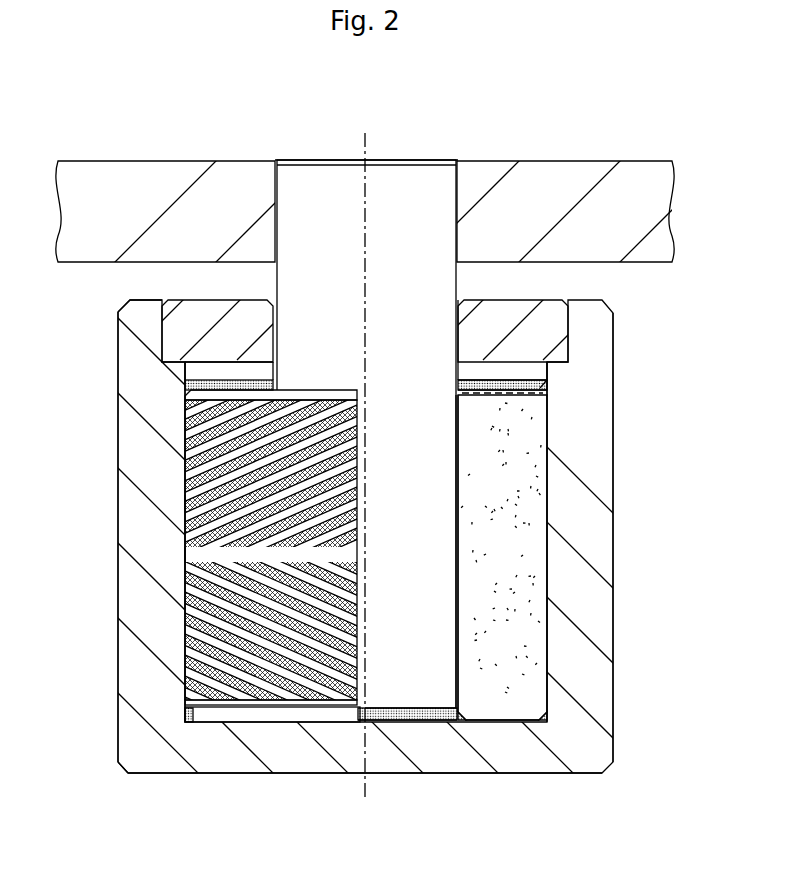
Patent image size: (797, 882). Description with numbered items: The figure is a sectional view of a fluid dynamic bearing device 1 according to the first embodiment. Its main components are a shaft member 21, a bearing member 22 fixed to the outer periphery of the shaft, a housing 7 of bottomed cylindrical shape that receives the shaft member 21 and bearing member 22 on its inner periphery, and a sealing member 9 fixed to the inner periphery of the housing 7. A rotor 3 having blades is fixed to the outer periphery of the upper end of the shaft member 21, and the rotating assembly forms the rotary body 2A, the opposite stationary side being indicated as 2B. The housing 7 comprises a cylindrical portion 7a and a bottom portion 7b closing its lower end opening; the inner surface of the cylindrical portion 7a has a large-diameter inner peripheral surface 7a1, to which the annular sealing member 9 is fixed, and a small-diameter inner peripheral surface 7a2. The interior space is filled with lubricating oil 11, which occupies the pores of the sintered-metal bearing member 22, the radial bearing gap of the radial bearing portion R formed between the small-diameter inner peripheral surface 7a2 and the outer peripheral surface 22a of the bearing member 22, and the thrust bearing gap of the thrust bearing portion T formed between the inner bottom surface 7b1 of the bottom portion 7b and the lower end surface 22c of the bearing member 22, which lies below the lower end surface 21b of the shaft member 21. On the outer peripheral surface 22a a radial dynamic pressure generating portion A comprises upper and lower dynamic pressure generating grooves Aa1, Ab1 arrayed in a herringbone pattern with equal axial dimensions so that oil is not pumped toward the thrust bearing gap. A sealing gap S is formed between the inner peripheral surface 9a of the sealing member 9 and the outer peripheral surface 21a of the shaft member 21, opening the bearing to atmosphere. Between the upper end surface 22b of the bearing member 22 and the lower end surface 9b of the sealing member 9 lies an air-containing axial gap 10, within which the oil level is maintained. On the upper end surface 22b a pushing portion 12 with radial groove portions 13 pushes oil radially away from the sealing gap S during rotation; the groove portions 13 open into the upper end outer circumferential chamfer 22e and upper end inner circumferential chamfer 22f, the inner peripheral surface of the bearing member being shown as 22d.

The fluid dynamic bearing device 1 is at (685, 345).
The rotary body 2A is at (464, 147).
The stationary side member 2B is at (108, 735).
The rotor 3 is at (556, 187).
The housing 7 is at (594, 452).
The cylindrical portion 7a is at (140, 473).
The large-diameter inner peripheral surface 7a1 is at (162, 342).
The small-diameter inner peripheral surface 7a2 is at (188, 577).
The bottom portion 7b is at (460, 758).
The inner bottom surface 7b1 is at (298, 720).
The sealing member 9 is at (548, 330).
The inner peripheral surface of the sealing member 9a is at (457, 332).
The lower end surface of the sealing member 9b is at (192, 373).
The axial gap 10 is at (235, 372).
The lubricating oil 11 is at (431, 722).
The pushing portion 12 is at (483, 383).
The groove portions 13 is at (505, 395).
The shaft member 21 is at (401, 193).
The outer peripheral surface of the shaft member 21a is at (460, 658).
The lower end surface of the shaft member 21b is at (397, 722).
The bearing member 22 is at (520, 492).
The outer peripheral surface of the bearing member 22a is at (548, 628).
The upper end surface of the bearing member 22b is at (548, 372).
The lower end surface of the bearing member 22c is at (235, 722).
The inner peripheral surface of bearing sleeve 22d is at (452, 540).
The upper end outer circumferential chamfer 22e is at (190, 384).
The upper end inner circumferential chamfer 22f is at (457, 385).
The radial dynamic pressure generating portion A is at (182, 446).
The upper dynamic pressure generating grooves Aa1 is at (192, 536).
The lower dynamic pressure generating grooves Ab1 is at (196, 652).
The radial bearing portion R is at (178, 503).
The sealing gap S is at (455, 323).
The thrust bearing portion T is at (500, 723).